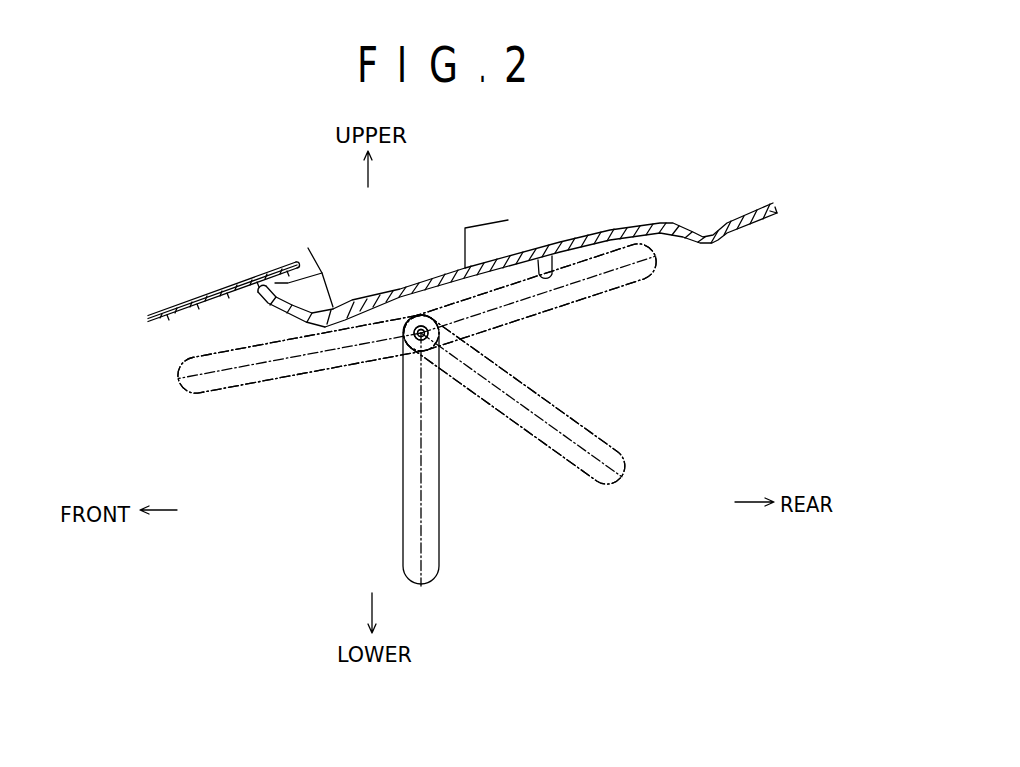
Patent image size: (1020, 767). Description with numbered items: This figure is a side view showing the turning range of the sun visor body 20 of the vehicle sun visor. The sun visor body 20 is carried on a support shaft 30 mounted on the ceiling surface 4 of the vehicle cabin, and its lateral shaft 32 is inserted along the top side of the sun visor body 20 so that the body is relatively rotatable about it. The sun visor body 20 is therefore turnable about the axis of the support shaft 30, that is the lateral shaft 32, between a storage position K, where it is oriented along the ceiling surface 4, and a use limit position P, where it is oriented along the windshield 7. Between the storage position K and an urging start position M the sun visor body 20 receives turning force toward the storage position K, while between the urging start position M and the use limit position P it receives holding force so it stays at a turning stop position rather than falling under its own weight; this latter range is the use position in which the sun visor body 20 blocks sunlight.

The ceiling surface 4 is at (553, 268).
The windshield 7 is at (268, 268).
The sun visor body 20 is at (283, 370).
The support shaft 30 is at (420, 320).
The lateral shaft 32 is at (420, 320).
The storage position K is at (618, 263).
The use limit position P is at (225, 370).
The urging start position M is at (582, 453).